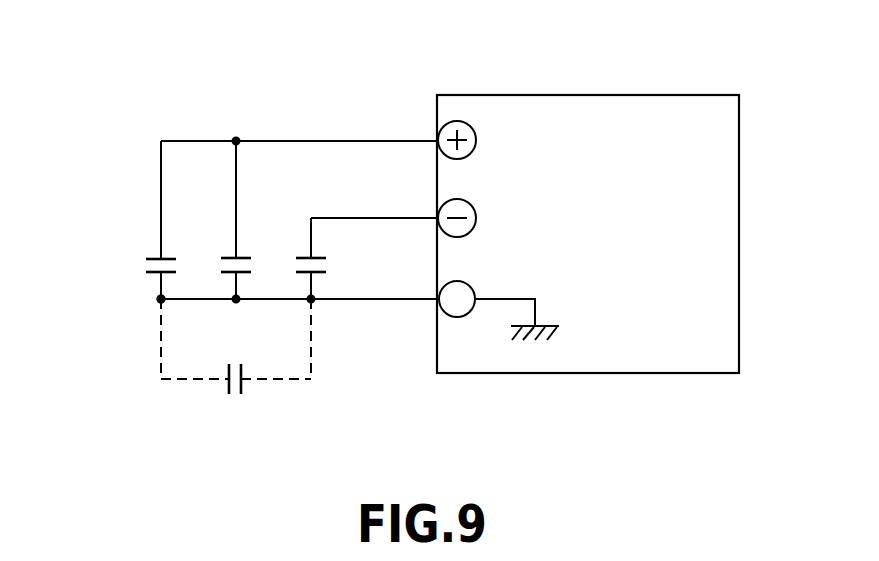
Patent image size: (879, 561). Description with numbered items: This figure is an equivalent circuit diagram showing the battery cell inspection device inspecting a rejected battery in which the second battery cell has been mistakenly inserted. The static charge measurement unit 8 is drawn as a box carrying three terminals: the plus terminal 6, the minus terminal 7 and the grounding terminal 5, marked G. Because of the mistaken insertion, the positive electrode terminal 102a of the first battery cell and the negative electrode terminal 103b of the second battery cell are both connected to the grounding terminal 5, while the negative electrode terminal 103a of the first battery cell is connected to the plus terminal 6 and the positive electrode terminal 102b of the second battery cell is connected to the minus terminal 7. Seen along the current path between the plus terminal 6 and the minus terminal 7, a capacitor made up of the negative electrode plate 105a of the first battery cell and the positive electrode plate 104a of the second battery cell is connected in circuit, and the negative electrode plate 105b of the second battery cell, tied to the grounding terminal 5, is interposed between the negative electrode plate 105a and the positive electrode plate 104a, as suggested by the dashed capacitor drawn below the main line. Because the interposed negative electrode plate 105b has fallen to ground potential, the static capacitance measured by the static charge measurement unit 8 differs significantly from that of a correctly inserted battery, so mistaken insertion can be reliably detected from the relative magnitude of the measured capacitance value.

The positive electrode terminal 102a is at (148, 274).
The negative electrode terminal 103a is at (148, 257).
The negative electrode plate 105a is at (228, 256).
The negative electrode plate 105b is at (228, 276).
The positive electrode terminal 102b is at (302, 256).
The negative electrode terminal 103b is at (324, 277).
The electrode 104a is at (226, 389).
The ground terminal 5 is at (437, 300).
The plus terminal 6 is at (437, 137).
The minus terminal 7 is at (437, 217).
The static charge measurement unit 8 is at (598, 107).